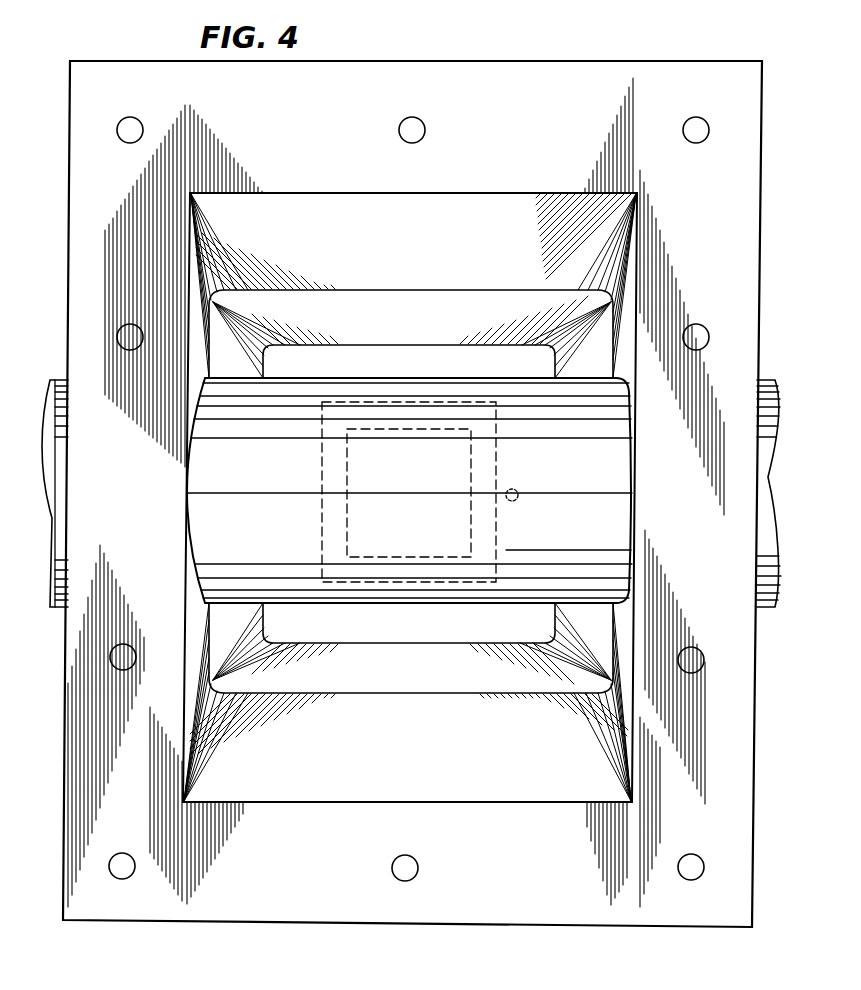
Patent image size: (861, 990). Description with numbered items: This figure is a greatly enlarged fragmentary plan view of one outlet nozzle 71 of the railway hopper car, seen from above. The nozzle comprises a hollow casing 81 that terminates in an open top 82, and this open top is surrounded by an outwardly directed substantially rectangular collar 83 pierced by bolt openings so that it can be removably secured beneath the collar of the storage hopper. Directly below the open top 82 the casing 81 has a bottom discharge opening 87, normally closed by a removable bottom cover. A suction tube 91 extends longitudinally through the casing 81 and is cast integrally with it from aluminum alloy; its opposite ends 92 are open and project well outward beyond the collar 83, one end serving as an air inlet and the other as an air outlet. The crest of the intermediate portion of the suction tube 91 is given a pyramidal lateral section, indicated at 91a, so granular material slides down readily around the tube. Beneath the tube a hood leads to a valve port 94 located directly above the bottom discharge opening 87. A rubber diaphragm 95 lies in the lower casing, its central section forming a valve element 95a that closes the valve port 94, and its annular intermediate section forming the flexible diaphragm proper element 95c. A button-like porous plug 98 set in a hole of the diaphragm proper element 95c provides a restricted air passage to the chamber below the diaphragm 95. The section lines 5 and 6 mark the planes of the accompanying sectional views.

The outlet nozzle 71 is at (239, 929).
The hollow casing 81 is at (303, 803).
The open top 82 is at (433, 197).
The rectangular collar 83 is at (500, 61).
The bottom discharge opening 87 is at (386, 349).
The suction tube 91 is at (392, 490).
The pyramidal crest 91a is at (226, 494).
The opposite ends of suction tube 92 is at (58, 380).
The valve port 94 is at (468, 518).
The diaphragm 95 is at (432, 632).
The valve element 95a is at (498, 545).
The diaphragm proper element 95c is at (317, 606).
The button-like plug 98 is at (515, 491).
The section line 5- 5 is at (43, 493).
The section line 6- 6 is at (412, 52).